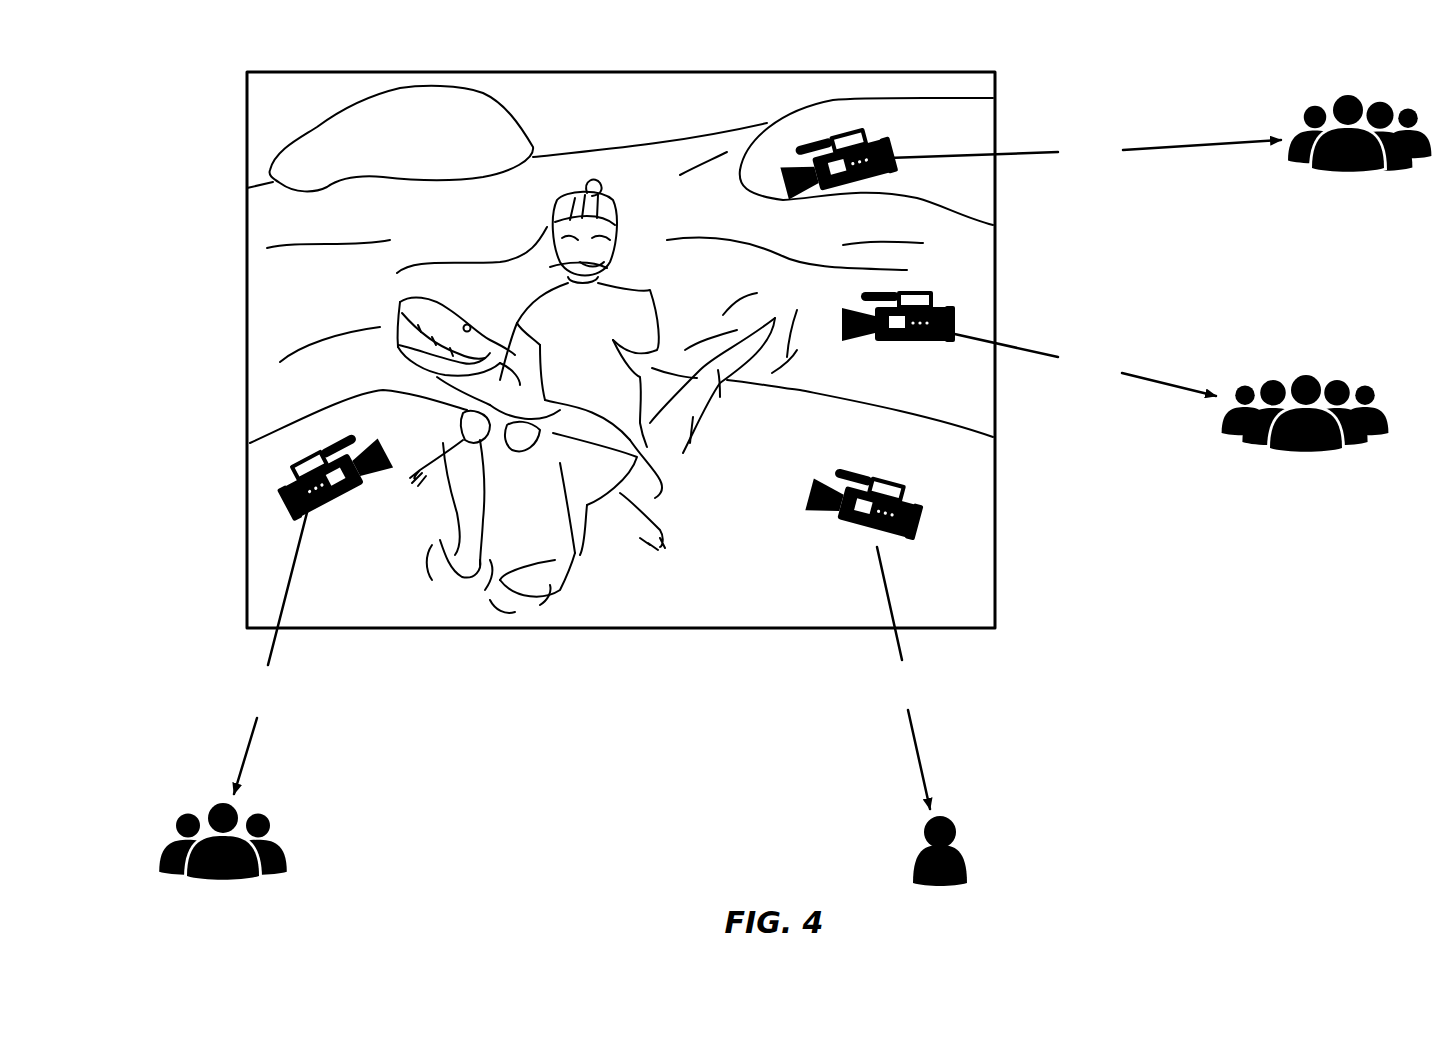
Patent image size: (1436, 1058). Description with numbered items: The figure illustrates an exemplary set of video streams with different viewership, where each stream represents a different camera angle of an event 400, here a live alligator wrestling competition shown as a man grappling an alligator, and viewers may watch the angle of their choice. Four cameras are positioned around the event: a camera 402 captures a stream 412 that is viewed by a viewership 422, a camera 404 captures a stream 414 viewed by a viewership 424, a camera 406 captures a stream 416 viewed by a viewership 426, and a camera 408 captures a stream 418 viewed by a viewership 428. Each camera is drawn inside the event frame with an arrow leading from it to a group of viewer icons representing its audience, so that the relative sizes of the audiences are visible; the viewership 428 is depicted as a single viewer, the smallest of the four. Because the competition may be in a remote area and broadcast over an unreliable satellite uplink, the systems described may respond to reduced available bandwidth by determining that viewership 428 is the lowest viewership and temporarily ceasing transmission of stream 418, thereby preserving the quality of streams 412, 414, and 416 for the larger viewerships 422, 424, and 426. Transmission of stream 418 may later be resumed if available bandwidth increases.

The event 400 is at (235, 130).
The camera 402 is at (248, 505).
The camera 404 is at (903, 130).
The camera 406 is at (976, 312).
The camera 408 is at (941, 545).
The stream 412 is at (272, 643).
The stream 414 is at (1084, 150).
The stream 416 is at (1083, 364).
The stream 418 is at (906, 678).
The viewership 422 is at (223, 866).
The viewership 424 is at (1359, 159).
The viewership 426 is at (1305, 437).
The viewership 428 is at (938, 873).